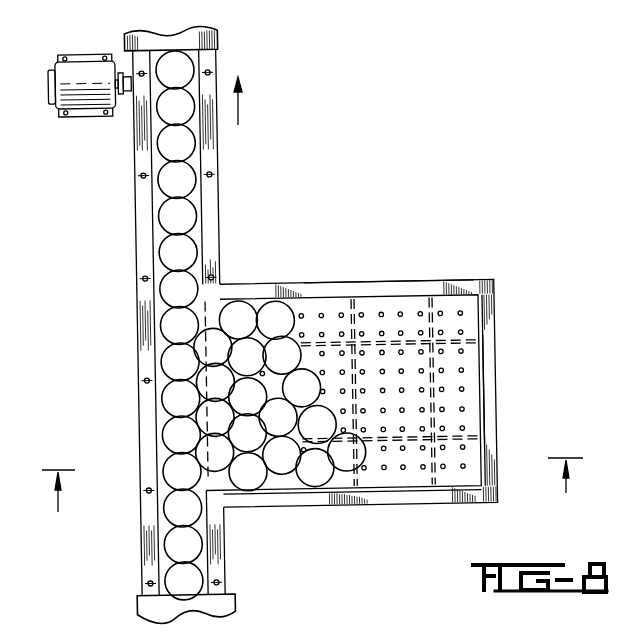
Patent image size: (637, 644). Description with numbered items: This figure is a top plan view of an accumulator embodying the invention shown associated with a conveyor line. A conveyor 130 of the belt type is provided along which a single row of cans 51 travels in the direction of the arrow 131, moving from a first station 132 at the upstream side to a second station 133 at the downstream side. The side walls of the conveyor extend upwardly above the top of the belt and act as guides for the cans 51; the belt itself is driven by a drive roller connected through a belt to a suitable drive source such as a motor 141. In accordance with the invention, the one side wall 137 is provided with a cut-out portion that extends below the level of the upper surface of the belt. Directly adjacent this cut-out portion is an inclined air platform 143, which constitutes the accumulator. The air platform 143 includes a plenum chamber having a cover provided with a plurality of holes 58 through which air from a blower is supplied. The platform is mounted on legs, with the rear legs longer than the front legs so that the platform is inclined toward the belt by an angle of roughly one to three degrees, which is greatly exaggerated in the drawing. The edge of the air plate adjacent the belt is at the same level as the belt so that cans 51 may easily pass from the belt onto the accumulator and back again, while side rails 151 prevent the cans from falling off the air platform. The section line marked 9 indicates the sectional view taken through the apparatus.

The conveyor 130 is at (123, 224).
The side wall 137 is at (205, 247).
The second station 133 is at (218, 40).
The first station 132 is at (148, 608).
The arrow 131 is at (238, 107).
The motor 141 is at (88, 97).
The inclined air platform 143 is at (369, 273).
The side rails 151 is at (330, 297).
The holes 58 is at (460, 352).
The cans 51 is at (182, 180).
The section line 9- 9 is at (312, 476).